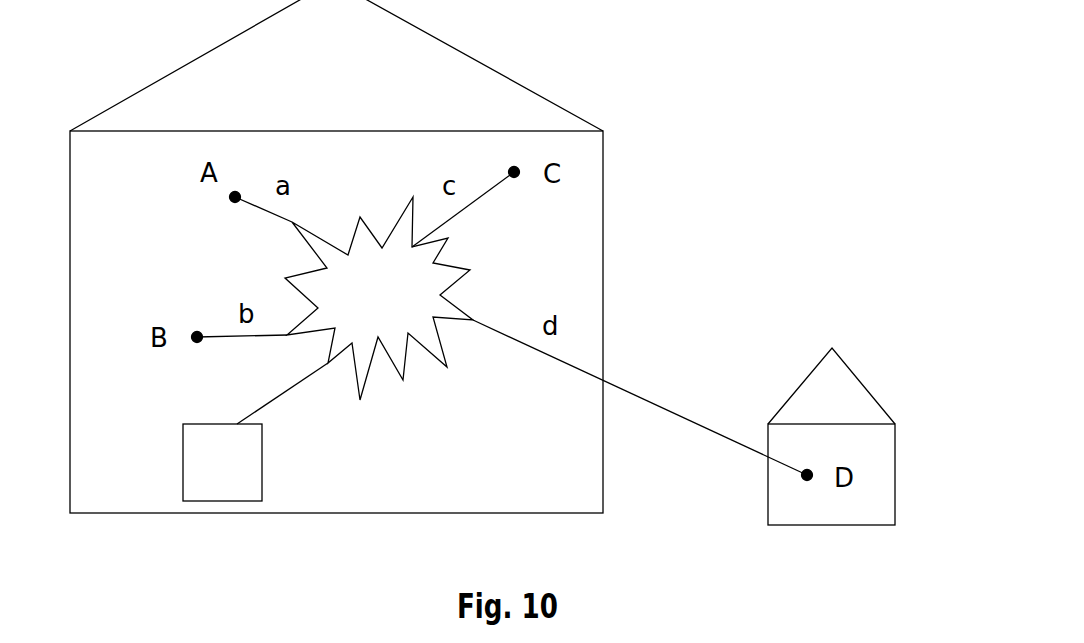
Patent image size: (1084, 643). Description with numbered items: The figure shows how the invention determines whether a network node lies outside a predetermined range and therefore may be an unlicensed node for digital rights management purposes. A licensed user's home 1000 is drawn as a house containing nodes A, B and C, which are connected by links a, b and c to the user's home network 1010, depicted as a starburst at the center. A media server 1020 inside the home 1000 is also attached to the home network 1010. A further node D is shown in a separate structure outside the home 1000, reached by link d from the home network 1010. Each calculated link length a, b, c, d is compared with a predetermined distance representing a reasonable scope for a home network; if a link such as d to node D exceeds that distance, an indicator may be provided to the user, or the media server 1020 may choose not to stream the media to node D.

The home 1000 is at (603, 195).
The home network 1010 is at (455, 394).
The media server 1020 is at (255, 432).